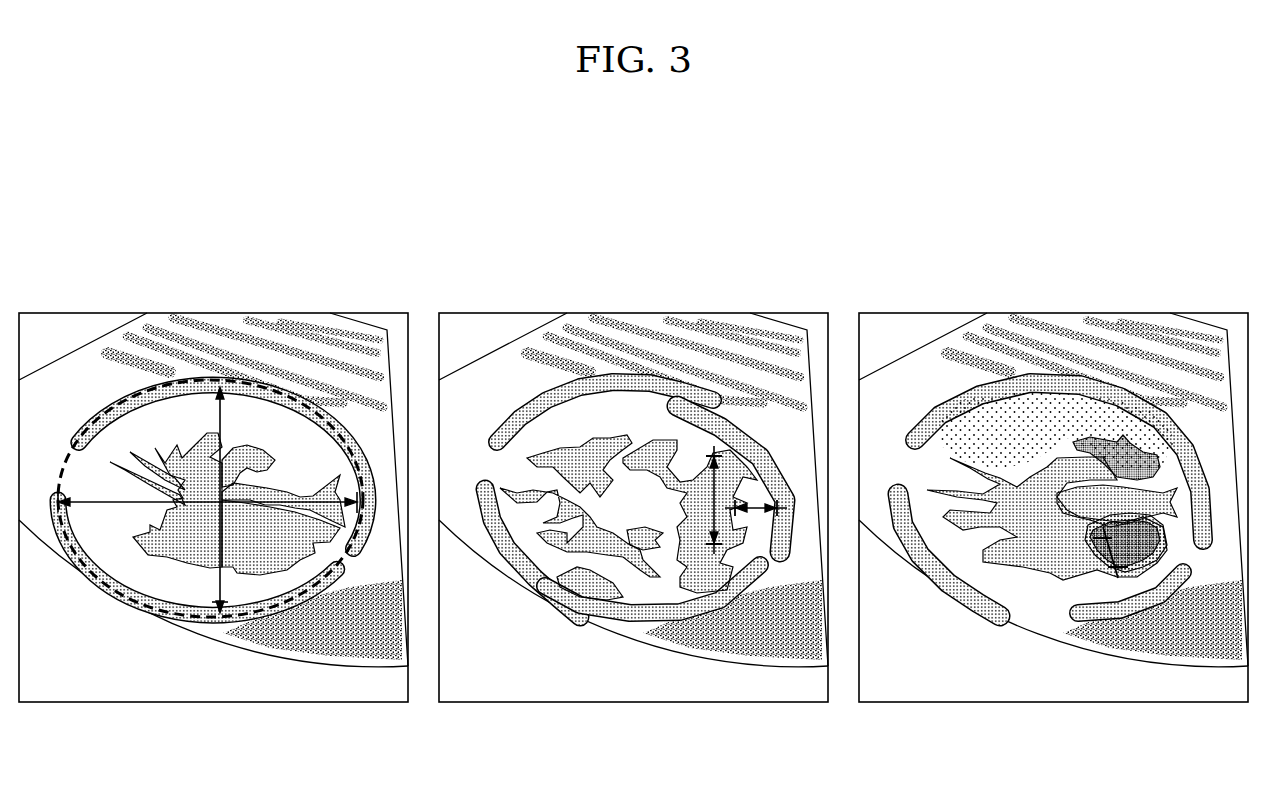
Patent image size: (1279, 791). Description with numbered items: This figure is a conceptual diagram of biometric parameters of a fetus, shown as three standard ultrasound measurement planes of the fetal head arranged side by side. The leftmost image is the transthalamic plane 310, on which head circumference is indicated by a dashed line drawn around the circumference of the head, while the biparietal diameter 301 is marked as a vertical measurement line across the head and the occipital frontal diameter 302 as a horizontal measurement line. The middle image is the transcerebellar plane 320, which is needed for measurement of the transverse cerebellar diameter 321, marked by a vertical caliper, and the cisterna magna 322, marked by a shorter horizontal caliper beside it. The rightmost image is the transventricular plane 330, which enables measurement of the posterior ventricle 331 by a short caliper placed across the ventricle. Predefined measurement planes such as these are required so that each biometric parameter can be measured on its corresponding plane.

The transthalamic plane (TTP) 310 is at (213, 492).
The biparietal diameter (BPD) 301 is at (221, 431).
The occipital frontal diameter (OFD) 302 is at (112, 504).
The transcerebellar plane (TCP) 320 is at (633, 492).
The transverse cerebellar diameter (TCD) 321 is at (714, 500).
The cisterna magna (CM) 322 is at (757, 510).
The transventricular plane (TVP) 330 is at (1053, 492).
The posterior ventricle (Vp) 331 is at (1107, 550).